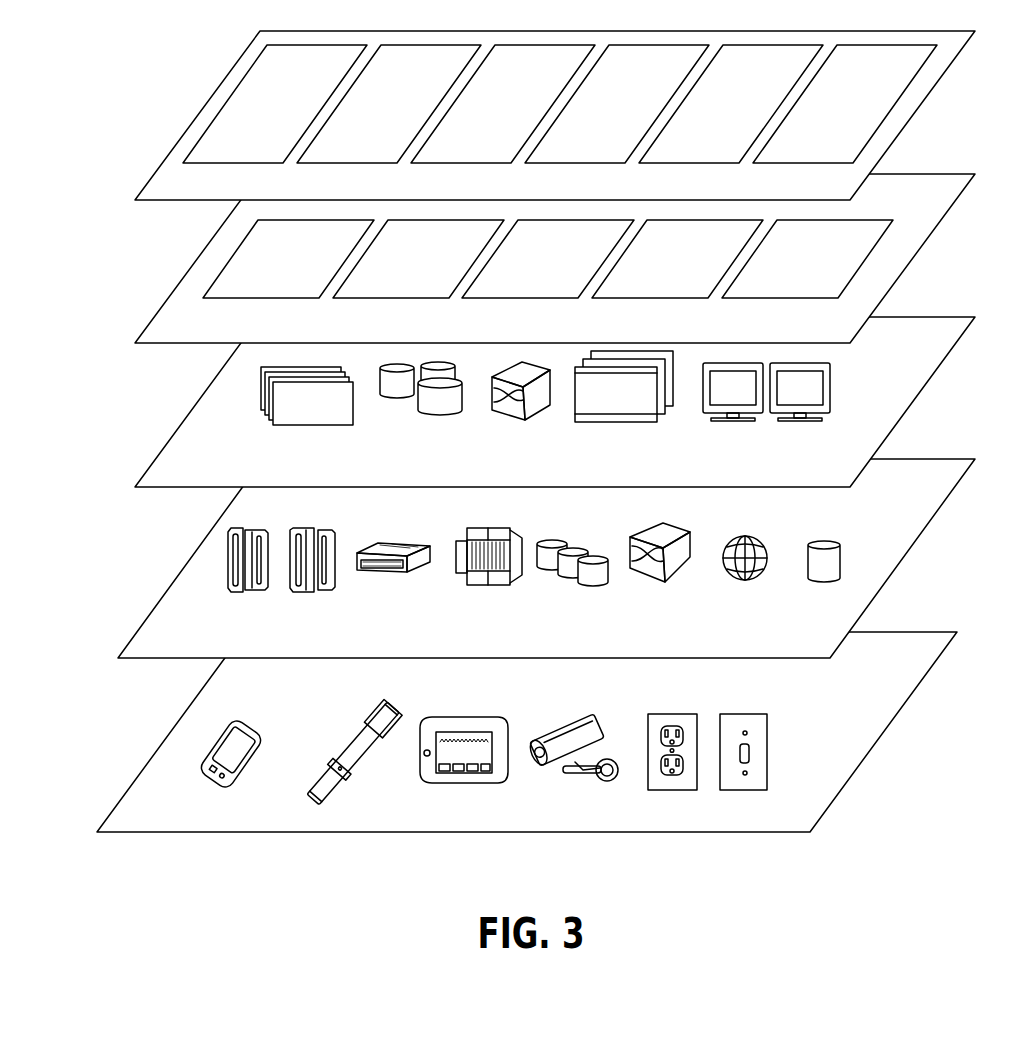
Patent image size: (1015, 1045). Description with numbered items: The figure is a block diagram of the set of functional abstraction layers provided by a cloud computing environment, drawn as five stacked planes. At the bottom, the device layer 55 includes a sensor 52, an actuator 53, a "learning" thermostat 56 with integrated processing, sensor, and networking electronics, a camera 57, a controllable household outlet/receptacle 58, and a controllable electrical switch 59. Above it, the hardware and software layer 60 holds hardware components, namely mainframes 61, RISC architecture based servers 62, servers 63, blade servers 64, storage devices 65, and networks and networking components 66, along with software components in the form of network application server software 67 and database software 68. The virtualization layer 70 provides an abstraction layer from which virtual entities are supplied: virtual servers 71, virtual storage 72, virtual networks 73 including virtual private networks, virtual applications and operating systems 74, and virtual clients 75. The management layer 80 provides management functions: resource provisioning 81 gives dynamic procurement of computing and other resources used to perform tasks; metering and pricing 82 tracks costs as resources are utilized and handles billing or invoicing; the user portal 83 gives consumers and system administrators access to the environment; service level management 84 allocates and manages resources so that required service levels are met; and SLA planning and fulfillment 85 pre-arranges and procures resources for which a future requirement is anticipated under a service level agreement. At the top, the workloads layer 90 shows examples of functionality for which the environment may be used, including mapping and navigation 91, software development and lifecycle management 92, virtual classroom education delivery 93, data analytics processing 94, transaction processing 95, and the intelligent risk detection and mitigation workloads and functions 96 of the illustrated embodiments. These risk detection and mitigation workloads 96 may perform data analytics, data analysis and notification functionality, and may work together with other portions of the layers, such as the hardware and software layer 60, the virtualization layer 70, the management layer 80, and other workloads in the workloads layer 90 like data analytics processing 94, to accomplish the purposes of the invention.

The sensor 52 is at (250, 772).
The actuator 53 is at (360, 765).
The device layer 55 is at (163, 832).
The learning thermostat 56 is at (465, 785).
The camera 57 is at (582, 777).
The controllable household outlet/receptacle 58 is at (672, 792).
The controllable electrical switch 59 is at (745, 792).
The hardware and software layer 60 is at (163, 658).
The mainframes 61 is at (240, 592).
The RISC architecture based servers 62 is at (302, 592).
The servers 63 is at (392, 573).
The blade servers 64 is at (500, 586).
The storage devices 65 is at (592, 585).
The networks and networking components 66 is at (665, 582).
The network application server software 67 is at (750, 580).
The database software 68 is at (830, 583).
The virtualization layer 70 is at (165, 487).
The virtual servers 71 is at (340, 425).
The virtual storage 72 is at (447, 415).
The virtual networks 73 is at (530, 417).
The virtual applications and operating systems 74 is at (632, 422).
The virtual clients 75 is at (770, 420).
The management layer 80 is at (165, 343).
The resource provisioning 81 is at (278, 263).
The metering and pricing 82 is at (408, 263).
The user portal 83 is at (538, 263).
The service level management 84 is at (668, 263).
The SLA planning and fulfillment 85 is at (798, 263).
The workloads layer 90 is at (165, 200).
The mapping and navigation 91 is at (265, 108).
The software development and lifecycle management 92 is at (379, 108).
The virtual classroom education delivery 93 is at (493, 108).
The data analytics processing 94 is at (607, 108).
The transaction processing 95 is at (721, 108).
The intelligent risk detection and mitigation workloads and functions 96 is at (835, 108).